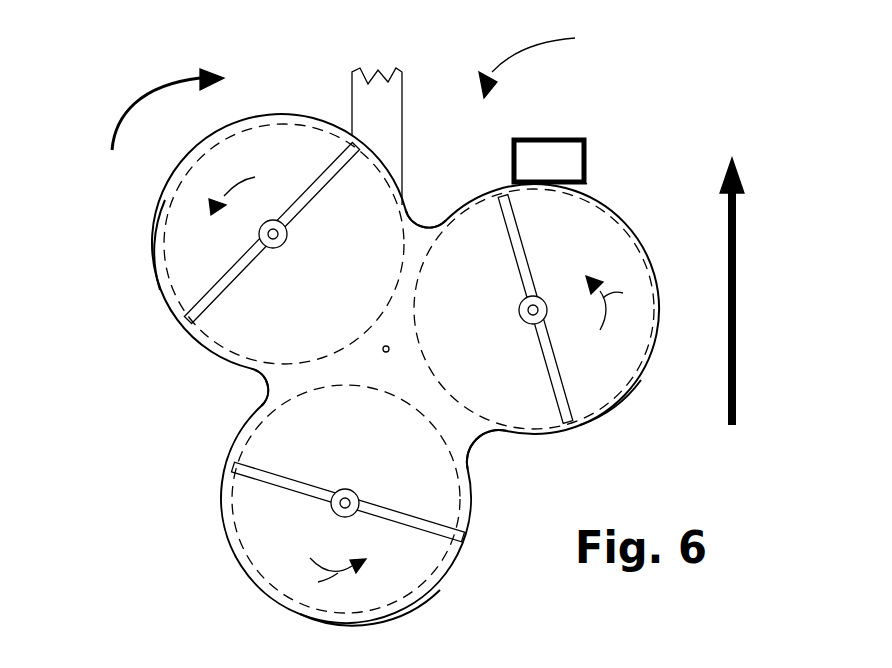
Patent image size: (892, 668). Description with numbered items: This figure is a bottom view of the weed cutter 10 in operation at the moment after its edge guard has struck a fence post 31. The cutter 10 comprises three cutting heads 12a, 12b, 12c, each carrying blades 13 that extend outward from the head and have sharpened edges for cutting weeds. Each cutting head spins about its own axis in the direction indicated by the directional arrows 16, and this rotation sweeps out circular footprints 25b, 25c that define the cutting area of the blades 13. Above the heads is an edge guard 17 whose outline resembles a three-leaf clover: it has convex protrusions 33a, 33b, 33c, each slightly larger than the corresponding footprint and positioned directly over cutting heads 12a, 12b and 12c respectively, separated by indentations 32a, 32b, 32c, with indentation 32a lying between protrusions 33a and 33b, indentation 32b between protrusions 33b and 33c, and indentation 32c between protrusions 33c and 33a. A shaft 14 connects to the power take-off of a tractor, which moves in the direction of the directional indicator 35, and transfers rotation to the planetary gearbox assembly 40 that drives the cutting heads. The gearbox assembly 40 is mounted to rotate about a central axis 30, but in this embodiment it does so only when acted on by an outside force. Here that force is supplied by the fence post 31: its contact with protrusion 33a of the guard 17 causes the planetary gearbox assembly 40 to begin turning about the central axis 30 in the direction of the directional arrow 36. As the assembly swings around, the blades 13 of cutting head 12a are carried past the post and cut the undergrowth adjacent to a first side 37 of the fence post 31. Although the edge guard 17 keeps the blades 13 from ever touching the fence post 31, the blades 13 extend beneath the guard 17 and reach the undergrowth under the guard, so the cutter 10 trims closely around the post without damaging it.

The weed cutter 10 is at (545, 63).
The cutting head 12a is at (526, 302).
The cutting head 12b is at (338, 493).
The cutting head 12c is at (287, 241).
The blades 13 is at (329, 162).
The shaft 14 is at (388, 134).
The directional arrows 16 is at (416, 371).
The edge guard 17 is at (655, 262).
The circular footprint 25b is at (237, 556).
The circular footprint 25c is at (190, 166).
The central axis 30 is at (390, 343).
The fence post 31 is at (546, 137).
The indentation 32a is at (478, 441).
The indentation 32b is at (264, 380).
The indentation 32c is at (410, 211).
The convex protrusion 33a is at (599, 422).
The convex protrusion 33b is at (402, 615).
The convex protrusion 33c is at (151, 266).
The directional indicator 35 is at (737, 262).
The directional arrow 36 is at (153, 93).
The first side 37 is at (587, 184).
The planetary gearbox assembly 40 is at (303, 113).